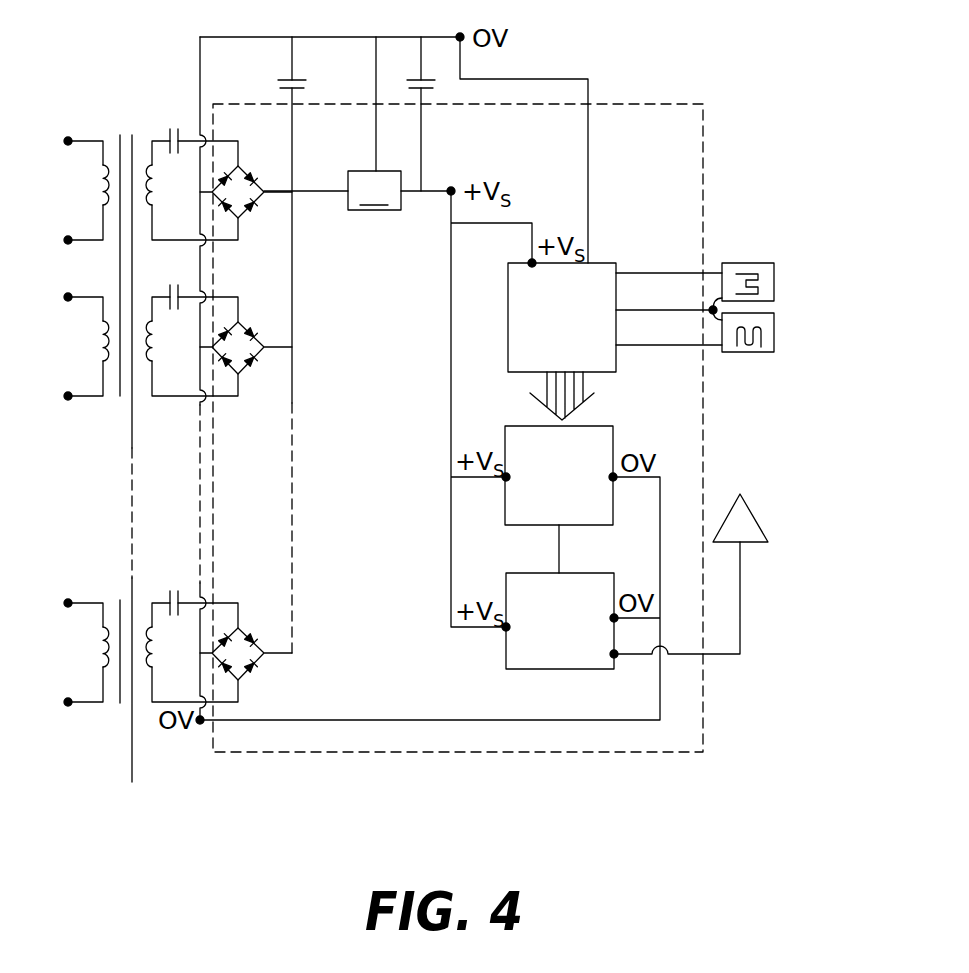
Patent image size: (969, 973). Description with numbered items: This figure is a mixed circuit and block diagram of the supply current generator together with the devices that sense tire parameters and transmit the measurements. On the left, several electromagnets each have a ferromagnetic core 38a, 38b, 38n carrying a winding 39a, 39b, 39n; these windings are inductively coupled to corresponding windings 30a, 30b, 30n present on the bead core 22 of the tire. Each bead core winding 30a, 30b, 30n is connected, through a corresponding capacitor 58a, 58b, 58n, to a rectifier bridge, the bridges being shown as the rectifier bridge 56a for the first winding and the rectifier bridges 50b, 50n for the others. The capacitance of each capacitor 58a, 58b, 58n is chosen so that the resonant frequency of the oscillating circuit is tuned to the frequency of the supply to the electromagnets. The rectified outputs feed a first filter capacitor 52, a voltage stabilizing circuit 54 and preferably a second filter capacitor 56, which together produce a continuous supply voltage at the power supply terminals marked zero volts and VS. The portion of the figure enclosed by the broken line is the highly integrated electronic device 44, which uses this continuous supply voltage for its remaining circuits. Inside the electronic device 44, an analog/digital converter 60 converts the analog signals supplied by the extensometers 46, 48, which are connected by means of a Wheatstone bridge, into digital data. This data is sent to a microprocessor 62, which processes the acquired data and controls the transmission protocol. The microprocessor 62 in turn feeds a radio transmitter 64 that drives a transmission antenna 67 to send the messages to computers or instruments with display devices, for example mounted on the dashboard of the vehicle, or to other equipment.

The bead core 22 is at (132, 135).
The ferromagnetic core 38a is at (118, 141).
The ferromagnetic core 38b is at (118, 296).
The ferromagnetic core 38n is at (118, 701).
The winding 39a is at (110, 207).
The winding 39b is at (110, 362).
The winding 39n is at (110, 668).
The winding 30a is at (152, 181).
The winding 30b is at (152, 365).
The winding 30n is at (152, 690).
The capacitor 58a is at (170, 134).
The capacitor 58b is at (168, 292).
The capacitor 58n is at (168, 598).
The rectifier bridge a 56a is at (249, 167).
The rectifier bridge 50b is at (246, 370).
The rectifier bridge 50n is at (248, 673).
The first filter capacitor 52 is at (306, 84).
The second filter capacitor 56 is at (448, 84).
The voltage stabilizing circuit 54 is at (374, 190).
The electronic device 44 is at (703, 148).
The analog/digital converter 60 is at (562, 317).
The microprocessor 62 is at (559, 475).
The radio transmitter 64 is at (560, 622).
The extensometer 46 is at (774, 282).
The extensometer 48 is at (774, 330).
The transmission antenna 67 is at (756, 514).